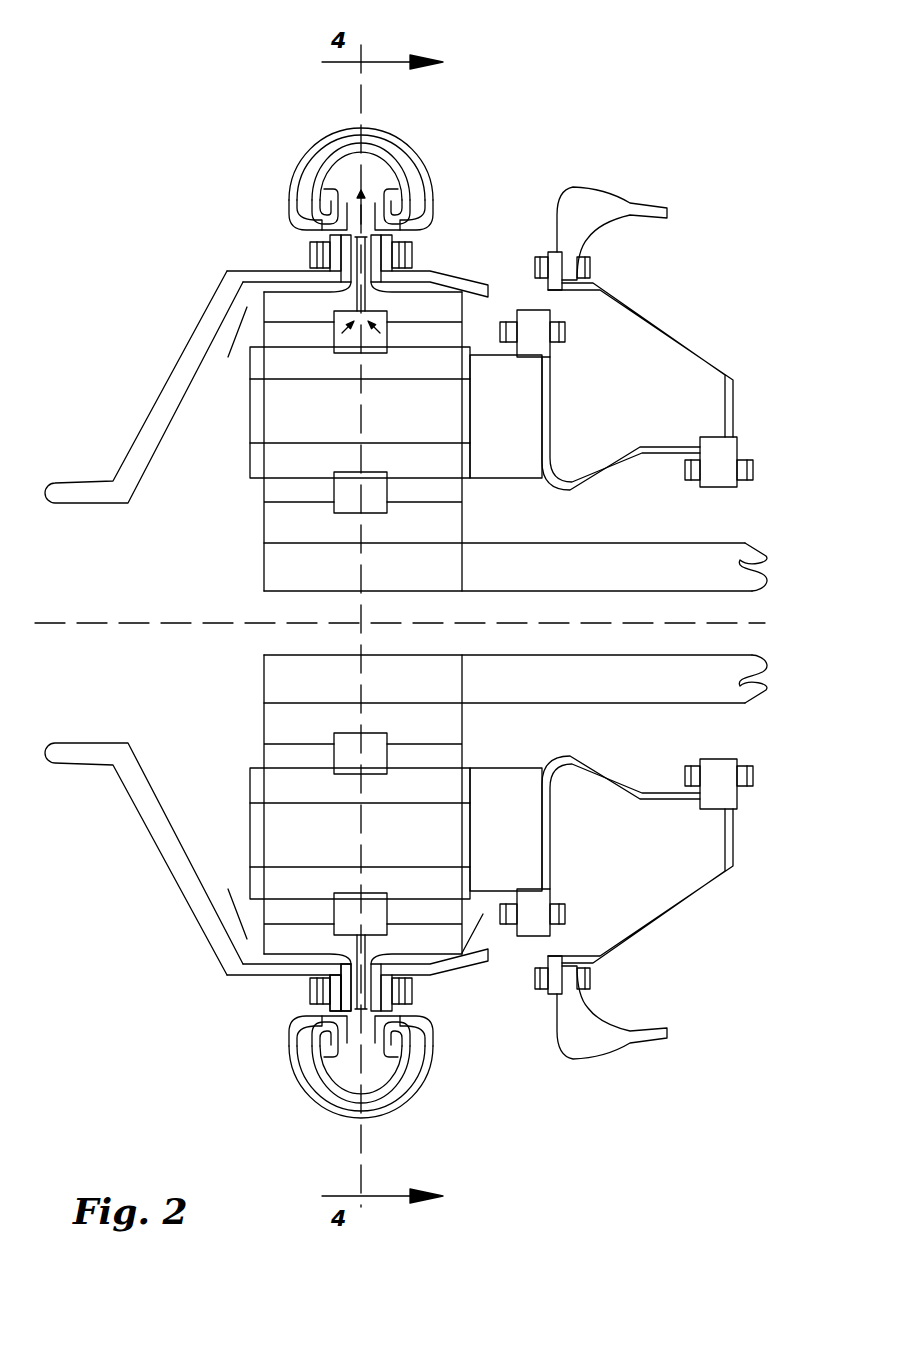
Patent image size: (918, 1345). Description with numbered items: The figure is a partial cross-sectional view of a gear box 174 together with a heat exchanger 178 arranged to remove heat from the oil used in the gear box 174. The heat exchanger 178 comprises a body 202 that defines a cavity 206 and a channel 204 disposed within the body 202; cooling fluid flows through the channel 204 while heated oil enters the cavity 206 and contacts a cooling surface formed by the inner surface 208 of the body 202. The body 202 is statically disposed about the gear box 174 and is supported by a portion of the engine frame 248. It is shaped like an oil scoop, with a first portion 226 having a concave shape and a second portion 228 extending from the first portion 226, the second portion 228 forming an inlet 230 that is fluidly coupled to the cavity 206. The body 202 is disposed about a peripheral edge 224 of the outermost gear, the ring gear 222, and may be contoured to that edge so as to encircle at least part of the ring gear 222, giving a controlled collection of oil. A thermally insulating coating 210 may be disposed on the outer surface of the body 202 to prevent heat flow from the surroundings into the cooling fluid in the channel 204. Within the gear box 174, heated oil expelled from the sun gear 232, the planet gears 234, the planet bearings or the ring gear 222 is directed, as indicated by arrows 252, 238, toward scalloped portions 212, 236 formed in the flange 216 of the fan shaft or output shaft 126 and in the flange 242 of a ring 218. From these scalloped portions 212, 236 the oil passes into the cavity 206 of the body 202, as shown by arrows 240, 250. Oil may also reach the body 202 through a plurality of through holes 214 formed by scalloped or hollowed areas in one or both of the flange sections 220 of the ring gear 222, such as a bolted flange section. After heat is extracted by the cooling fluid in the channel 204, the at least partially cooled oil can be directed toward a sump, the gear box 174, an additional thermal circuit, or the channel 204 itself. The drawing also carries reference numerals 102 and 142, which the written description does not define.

The central axis 102 is at (761, 622).
The fan shaft (output shaft) 126 is at (169, 377).
The shaft 142 is at (622, 547).
The gear box 174 is at (429, 108).
The heat exchanger 178 is at (351, 108).
The body 202 is at (293, 212).
The channel 204 is at (407, 157).
The cavity 206 is at (386, 179).
The inner surface 208 is at (331, 167).
The thermally insulating coating 210 is at (336, 128).
The scalloped portion 212 is at (400, 232).
The through holes 214 is at (350, 283).
The flange 216 is at (330, 1010).
The ring 218 is at (423, 307).
The flange section 220 is at (341, 255).
The ring gear 222 is at (483, 332).
The peripheral edge 224 is at (346, 1018).
The first portion 226 is at (384, 1122).
The second portion 228 is at (435, 1022).
The inlet 230 is at (367, 1020).
The sun gear 232 is at (463, 513).
The planet gears 234 is at (470, 463).
The scalloped portion 236 is at (328, 238).
The arrow 238 is at (473, 308).
The arrow 240 is at (385, 200).
The flange 242 is at (392, 257).
The engine frame 248 is at (583, 1062).
The arrow 250 is at (337, 200).
The arrow 252 is at (268, 290).